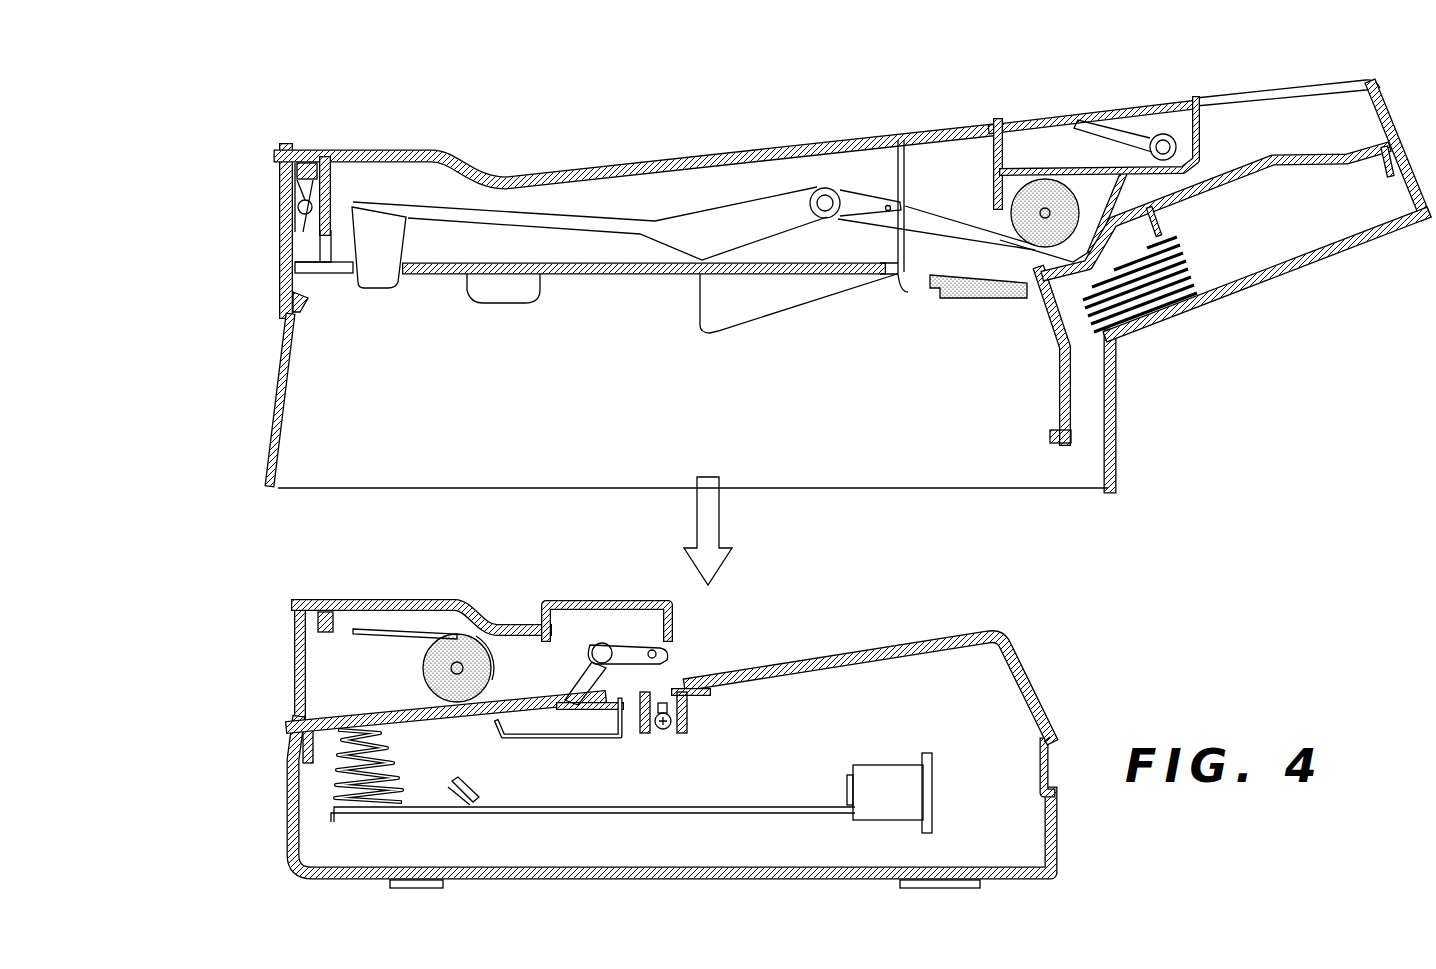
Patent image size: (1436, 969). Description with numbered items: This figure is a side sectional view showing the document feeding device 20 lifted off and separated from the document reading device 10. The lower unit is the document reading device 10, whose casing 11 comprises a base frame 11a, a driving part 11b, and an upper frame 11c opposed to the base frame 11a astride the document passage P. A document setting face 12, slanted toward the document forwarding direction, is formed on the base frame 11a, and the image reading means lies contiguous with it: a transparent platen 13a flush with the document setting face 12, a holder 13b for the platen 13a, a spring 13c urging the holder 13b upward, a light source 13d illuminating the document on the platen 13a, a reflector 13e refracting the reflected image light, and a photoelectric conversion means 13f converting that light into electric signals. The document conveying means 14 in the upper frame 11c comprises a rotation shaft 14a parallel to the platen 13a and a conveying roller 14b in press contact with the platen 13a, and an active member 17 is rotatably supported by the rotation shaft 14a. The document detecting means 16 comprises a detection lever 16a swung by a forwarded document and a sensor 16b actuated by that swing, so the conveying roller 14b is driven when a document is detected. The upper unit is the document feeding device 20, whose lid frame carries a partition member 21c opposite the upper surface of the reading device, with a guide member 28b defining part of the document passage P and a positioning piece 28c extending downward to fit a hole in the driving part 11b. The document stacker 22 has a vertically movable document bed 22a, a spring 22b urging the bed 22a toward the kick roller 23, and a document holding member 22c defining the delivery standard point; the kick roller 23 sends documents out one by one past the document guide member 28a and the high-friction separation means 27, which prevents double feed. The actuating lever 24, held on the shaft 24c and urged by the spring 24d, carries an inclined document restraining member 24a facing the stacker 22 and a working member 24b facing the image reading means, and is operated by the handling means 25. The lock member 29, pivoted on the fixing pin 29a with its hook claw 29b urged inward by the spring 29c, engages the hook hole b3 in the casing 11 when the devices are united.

The document reading device 10 is at (650, 712).
The casing 11 is at (603, 747).
The base frame 11a is at (206, 758).
The driving part 11b is at (303, 730).
The upper frame 11c is at (235, 797).
The document setting face 12 is at (870, 648).
The transparent platen 13a is at (520, 740).
The holder 13b is at (663, 735).
The spring 13c is at (400, 812).
The light source 13d is at (648, 735).
The reflector 13e is at (462, 800).
The photoelectric conversion means 13f is at (870, 810).
The document conveying means 14 is at (388, 600).
The rotation shaft 14a is at (449, 628).
The conveying roller 14b is at (445, 660).
The document detecting means 16 is at (606, 601).
The detection lever 16a is at (580, 678).
The sensor 16b is at (650, 653).
The active member 17 is at (360, 605).
The document feeding device 20 is at (1152, 430).
The partition member 21c is at (613, 260).
The document stacker 22 is at (1235, 304).
The document bed 22a is at (1280, 170).
The spring 22b is at (1207, 253).
The document holding member 22c is at (1420, 402).
The kick roller 23 is at (975, 220).
The actuating lever 24 is at (693, 175).
The document restraining member 24a is at (1112, 165).
The working member 24b is at (380, 232).
The shaft 24c is at (824, 188).
The spring 24d is at (887, 207).
The handling means 25 is at (1027, 117).
The separation means 27 is at (955, 298).
The document guide member 28a is at (903, 292).
The guide member 28b is at (777, 290).
The positioning piece 28c is at (518, 300).
The lock member 29 is at (252, 194).
The fixing pin 29a is at (292, 226).
The hook claw 29b is at (310, 297).
The spring 29c is at (212, 182).
The hook hole b3 is at (315, 622).
The document passage P is at (330, 712).